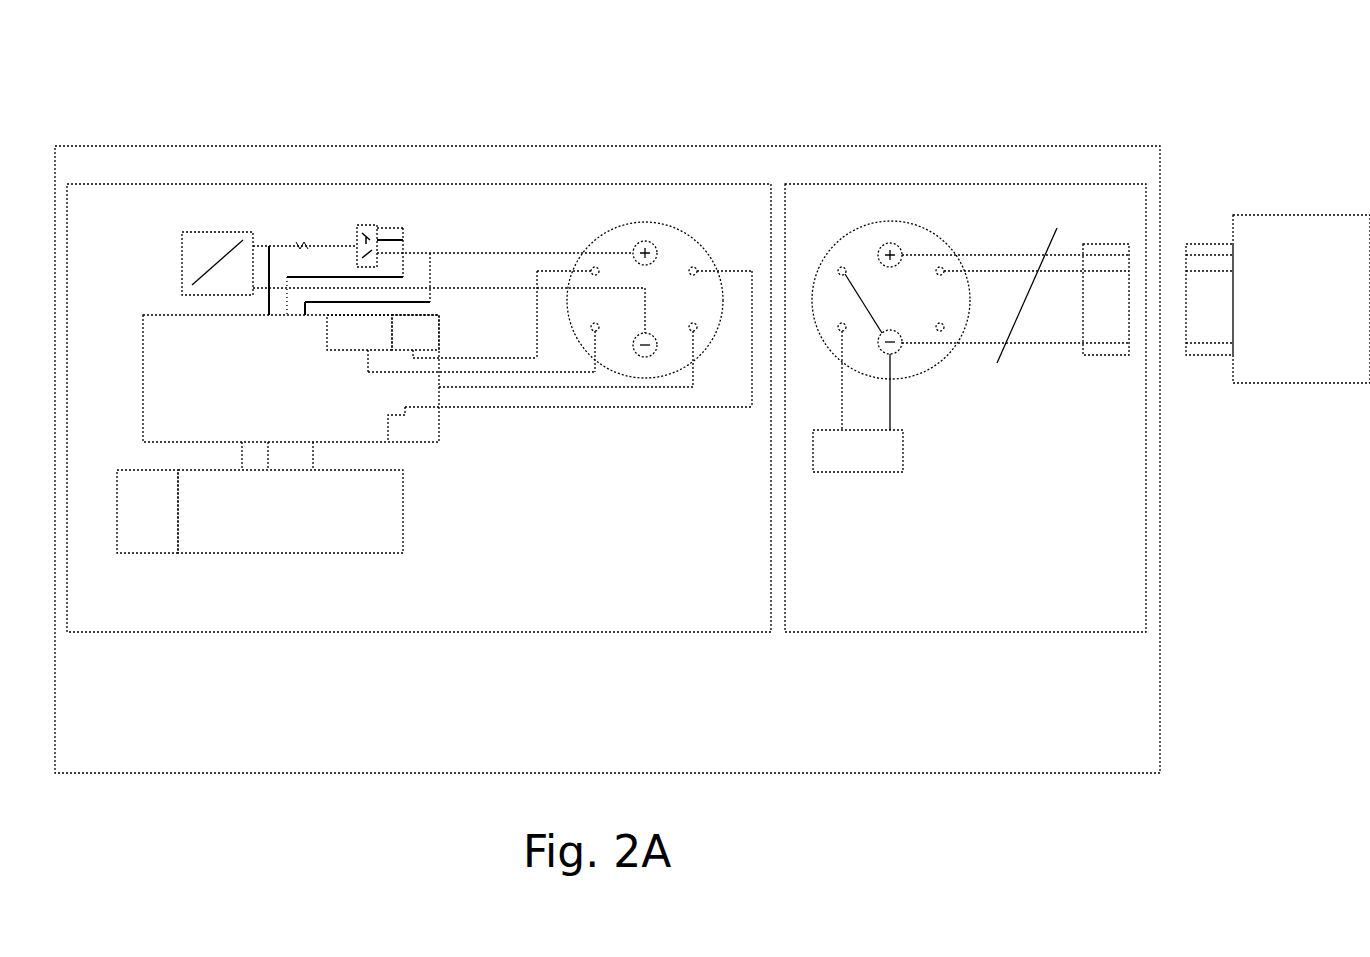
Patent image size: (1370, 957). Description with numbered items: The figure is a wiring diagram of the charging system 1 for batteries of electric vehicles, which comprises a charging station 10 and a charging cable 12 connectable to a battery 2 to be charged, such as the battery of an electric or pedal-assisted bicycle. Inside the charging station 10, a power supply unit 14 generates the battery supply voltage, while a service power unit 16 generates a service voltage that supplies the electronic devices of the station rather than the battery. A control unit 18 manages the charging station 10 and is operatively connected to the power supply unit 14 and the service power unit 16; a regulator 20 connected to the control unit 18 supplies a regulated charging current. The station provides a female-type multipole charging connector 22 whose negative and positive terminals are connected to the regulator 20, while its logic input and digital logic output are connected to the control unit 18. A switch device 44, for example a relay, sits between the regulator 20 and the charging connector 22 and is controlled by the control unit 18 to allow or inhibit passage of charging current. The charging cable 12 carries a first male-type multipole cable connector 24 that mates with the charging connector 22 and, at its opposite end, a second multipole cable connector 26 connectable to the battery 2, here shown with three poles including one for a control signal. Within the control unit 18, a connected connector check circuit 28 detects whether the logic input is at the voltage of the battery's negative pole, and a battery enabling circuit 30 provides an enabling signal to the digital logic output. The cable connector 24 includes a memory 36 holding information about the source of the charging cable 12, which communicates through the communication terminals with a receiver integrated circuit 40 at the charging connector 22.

The charging system 1 is at (1240, 729).
The battery 2 is at (1308, 215).
The charging station 10 is at (635, 641).
The charging cable 12 is at (1018, 380).
The power supply unit 14 is at (303, 525).
The service power unit 16 is at (169, 525).
The control unit 18 is at (283, 413).
The regulator 20 is at (222, 232).
The female-type multipole charging connector 22 is at (675, 222).
The first male-type multipole cable connector 24 is at (906, 222).
The second multipole cable connector 26 is at (1104, 244).
The connected connector check circuit 28 is at (413, 333).
The battery enabling circuit 30 is at (425, 432).
The memory 36 is at (860, 462).
The receiver integrated circuit 40 is at (338, 334).
The switch device 44 is at (366, 225).